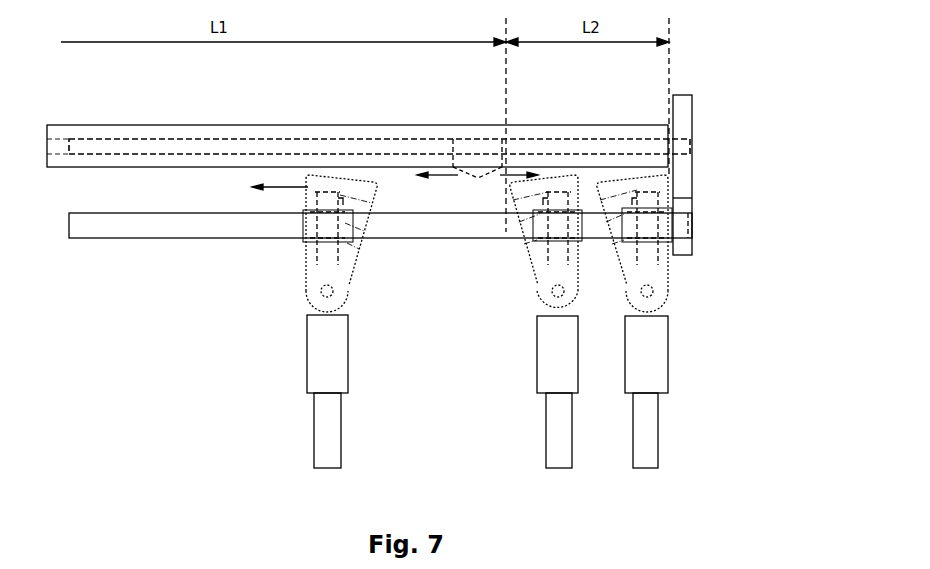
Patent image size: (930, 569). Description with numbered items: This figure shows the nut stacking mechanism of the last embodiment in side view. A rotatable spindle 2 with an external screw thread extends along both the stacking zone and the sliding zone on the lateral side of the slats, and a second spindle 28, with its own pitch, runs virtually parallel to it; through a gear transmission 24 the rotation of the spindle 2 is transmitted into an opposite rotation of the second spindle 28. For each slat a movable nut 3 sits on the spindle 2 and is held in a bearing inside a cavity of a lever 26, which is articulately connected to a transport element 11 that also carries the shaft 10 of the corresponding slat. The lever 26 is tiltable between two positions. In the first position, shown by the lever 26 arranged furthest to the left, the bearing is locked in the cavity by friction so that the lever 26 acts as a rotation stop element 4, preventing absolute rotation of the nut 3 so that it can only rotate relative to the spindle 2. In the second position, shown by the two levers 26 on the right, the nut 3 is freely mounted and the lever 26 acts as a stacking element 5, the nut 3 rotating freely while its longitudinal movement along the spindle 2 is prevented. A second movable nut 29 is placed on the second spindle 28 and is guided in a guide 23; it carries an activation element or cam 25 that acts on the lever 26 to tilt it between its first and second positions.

The spindle 2 is at (148, 227).
The movable nut 3 is at (347, 242).
The rotation stop element 4 is at (315, 183).
The stacking element 5 is at (565, 183).
The shaft 10 is at (331, 458).
The transport element 11 is at (315, 353).
The guide 23 is at (188, 133).
The gear transmission 24 is at (682, 113).
The activation element or cam 25 is at (480, 173).
The lever 26 is at (310, 249).
The second spindle 28 is at (115, 143).
The second movable nut 29 is at (468, 132).